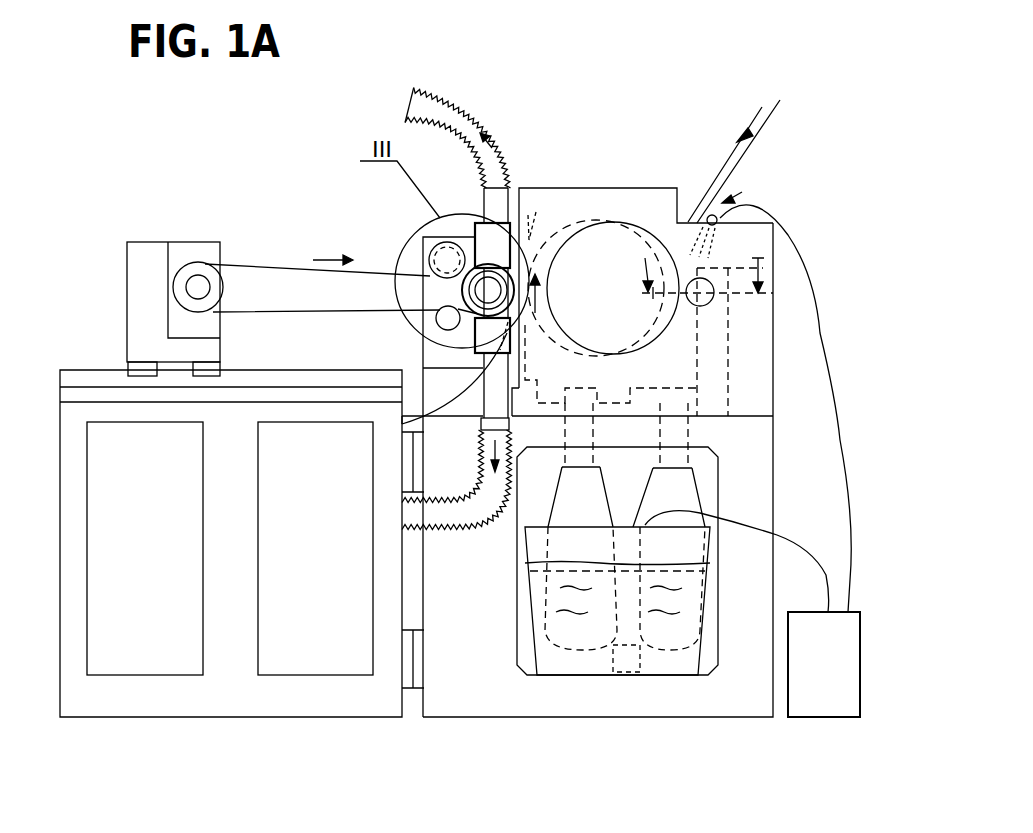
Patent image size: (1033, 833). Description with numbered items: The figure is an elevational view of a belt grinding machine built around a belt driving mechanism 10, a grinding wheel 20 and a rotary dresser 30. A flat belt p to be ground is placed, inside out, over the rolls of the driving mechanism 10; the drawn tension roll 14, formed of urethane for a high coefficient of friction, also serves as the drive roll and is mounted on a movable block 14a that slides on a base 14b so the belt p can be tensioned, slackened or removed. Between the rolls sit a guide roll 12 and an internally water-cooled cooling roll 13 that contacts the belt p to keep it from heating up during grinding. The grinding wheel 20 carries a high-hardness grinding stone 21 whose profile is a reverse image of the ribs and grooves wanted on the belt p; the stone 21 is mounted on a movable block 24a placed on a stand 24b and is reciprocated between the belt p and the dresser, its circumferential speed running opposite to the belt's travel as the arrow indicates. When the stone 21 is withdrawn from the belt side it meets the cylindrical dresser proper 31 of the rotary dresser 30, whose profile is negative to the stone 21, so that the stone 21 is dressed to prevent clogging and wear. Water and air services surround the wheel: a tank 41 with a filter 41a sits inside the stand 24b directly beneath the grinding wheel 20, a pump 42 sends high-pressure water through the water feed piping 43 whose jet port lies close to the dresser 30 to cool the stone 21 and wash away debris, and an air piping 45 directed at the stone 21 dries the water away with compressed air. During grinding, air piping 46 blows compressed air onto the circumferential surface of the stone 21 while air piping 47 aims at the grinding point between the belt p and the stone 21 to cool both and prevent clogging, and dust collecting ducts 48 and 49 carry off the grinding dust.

The belt driving mechanism 10 is at (106, 190).
The tension roll 14 is at (201, 268).
The movable block 14a is at (135, 318).
The base 14b is at (250, 481).
The belt p is at (270, 263).
The guide roll 12 is at (432, 254).
The cooling roll 13 is at (437, 323).
The air piping 46 is at (533, 213).
The air piping 47 is at (444, 400).
The dust collecting duct 48 is at (477, 512).
The dust collecting duct 49 is at (493, 140).
The grinding wheel 20 is at (585, 192).
The grinding stone 21 is at (590, 222).
The movable block 24a is at (625, 363).
The stand 24b is at (488, 584).
The rotary dresser 30 is at (673, 246).
The dresser proper 31 is at (706, 297).
The air piping 45 is at (757, 138).
The water feed piping 43 is at (820, 333).
The tank 41 is at (562, 662).
The filter 41a is at (667, 652).
The pump 42 is at (802, 703).